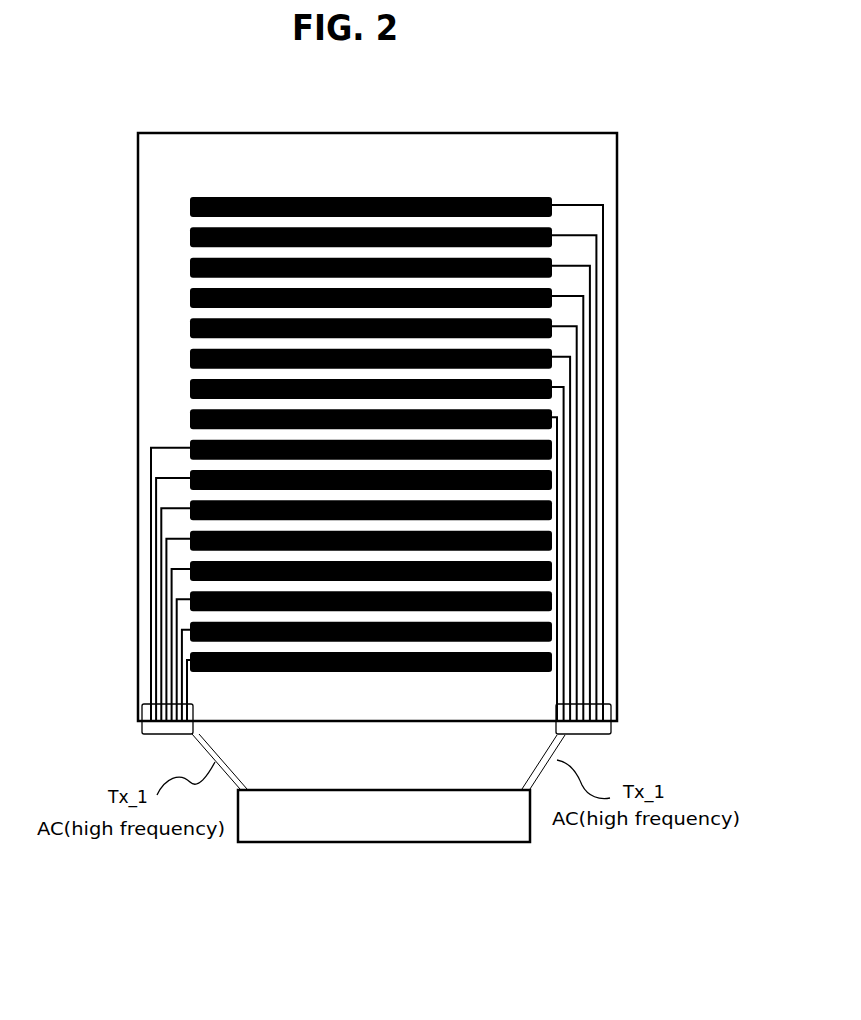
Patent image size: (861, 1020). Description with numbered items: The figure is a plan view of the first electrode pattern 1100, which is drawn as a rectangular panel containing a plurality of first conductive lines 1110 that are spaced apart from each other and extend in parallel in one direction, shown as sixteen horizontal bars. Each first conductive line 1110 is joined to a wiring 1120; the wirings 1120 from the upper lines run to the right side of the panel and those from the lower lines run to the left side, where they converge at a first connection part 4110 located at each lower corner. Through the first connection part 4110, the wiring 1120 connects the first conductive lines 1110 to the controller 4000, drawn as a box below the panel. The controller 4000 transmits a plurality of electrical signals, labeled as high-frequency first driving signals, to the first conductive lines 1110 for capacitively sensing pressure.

The first electrode pattern 1100 is at (198, 163).
The first conductive line 1110 is at (190, 212).
The wiring 1120 is at (600, 203).
The first connection part 4110 is at (142, 731).
The controller 4000 is at (435, 843).